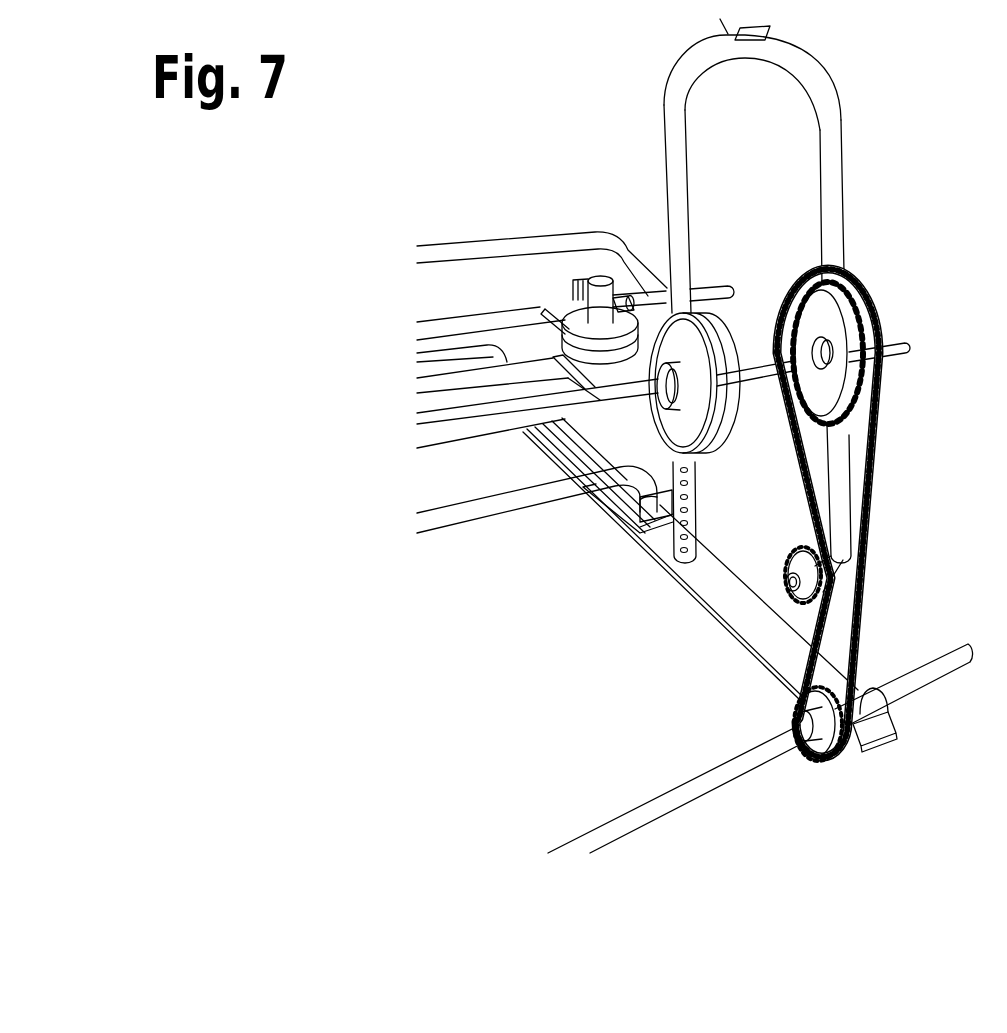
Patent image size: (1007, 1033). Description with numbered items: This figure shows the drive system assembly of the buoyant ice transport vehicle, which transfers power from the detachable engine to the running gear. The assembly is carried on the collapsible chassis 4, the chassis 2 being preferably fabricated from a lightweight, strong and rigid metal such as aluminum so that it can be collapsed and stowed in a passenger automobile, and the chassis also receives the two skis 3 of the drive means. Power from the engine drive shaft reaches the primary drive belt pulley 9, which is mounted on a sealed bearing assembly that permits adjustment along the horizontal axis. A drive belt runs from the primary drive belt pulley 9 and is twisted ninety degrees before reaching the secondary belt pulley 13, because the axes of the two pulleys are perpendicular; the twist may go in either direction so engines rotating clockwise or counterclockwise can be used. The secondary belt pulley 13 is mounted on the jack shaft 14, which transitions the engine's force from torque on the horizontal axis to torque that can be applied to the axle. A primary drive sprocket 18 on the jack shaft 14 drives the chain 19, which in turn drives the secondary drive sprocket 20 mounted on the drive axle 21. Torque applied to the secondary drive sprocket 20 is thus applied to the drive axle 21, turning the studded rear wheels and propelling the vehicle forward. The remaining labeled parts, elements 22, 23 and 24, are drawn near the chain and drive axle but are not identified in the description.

The chassis 2 is at (535, 494).
The skis 3 is at (740, 612).
The collapsible chassis 4 is at (818, 82).
The primary drive belt pulley 9 is at (575, 319).
The secondary belt pulley 13 is at (692, 372).
The jack shaft 14 is at (487, 425).
The primary drive sprocket 18 is at (875, 340).
The chain 19 is at (884, 452).
The secondary drive sprocket 20 is at (800, 716).
The drive axle 21 is at (718, 775).
The chain tensioner 22 is at (796, 563).
The bearing bracket 23 is at (884, 702).
The mounting plate 24 is at (876, 740).